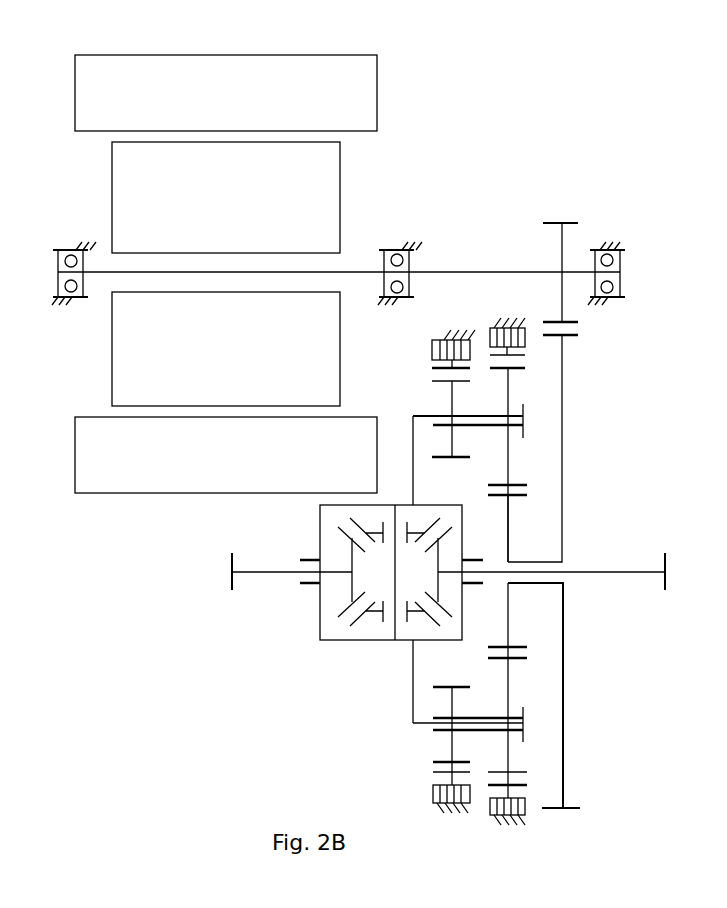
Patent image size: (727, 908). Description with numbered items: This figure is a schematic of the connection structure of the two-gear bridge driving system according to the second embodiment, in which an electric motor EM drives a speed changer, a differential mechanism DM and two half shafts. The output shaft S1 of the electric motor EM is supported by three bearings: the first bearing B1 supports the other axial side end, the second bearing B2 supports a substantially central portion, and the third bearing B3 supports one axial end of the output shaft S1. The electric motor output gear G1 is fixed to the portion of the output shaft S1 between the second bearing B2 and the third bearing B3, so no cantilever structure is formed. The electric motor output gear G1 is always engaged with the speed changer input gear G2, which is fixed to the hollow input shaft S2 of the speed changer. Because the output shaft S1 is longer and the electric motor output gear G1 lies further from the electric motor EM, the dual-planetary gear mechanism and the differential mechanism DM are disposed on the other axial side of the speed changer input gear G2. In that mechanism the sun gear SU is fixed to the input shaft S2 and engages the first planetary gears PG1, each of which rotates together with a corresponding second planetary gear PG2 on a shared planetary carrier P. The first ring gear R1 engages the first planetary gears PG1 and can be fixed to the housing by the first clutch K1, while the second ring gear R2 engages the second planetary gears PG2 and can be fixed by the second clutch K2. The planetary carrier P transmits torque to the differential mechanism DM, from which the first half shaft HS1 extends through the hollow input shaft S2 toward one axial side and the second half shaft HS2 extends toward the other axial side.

The electric motor EM is at (226, 274).
The output shaft S1 is at (339, 259).
The input shaft S2 is at (543, 557).
The first bearing B1 is at (61, 269).
The second bearing B2 is at (386, 269).
The third bearing B3 is at (621, 266).
The electric motor output gear G1 is at (552, 272).
The speed changer input gear G2 is at (566, 367).
The first clutch K1 is at (523, 327).
The second clutch K2 is at (431, 348).
The first ring gear R1 is at (488, 351).
The second ring gear R2 is at (430, 367).
The first planetary gear PG1 is at (518, 596).
The second planetary gear PG2 is at (436, 597).
The planetary carrier P is at (459, 573).
The sun gear SU is at (492, 528).
The differential mechanism DM is at (391, 572).
The first half shaft HS1 is at (551, 570).
The second half shaft HS2 is at (292, 571).